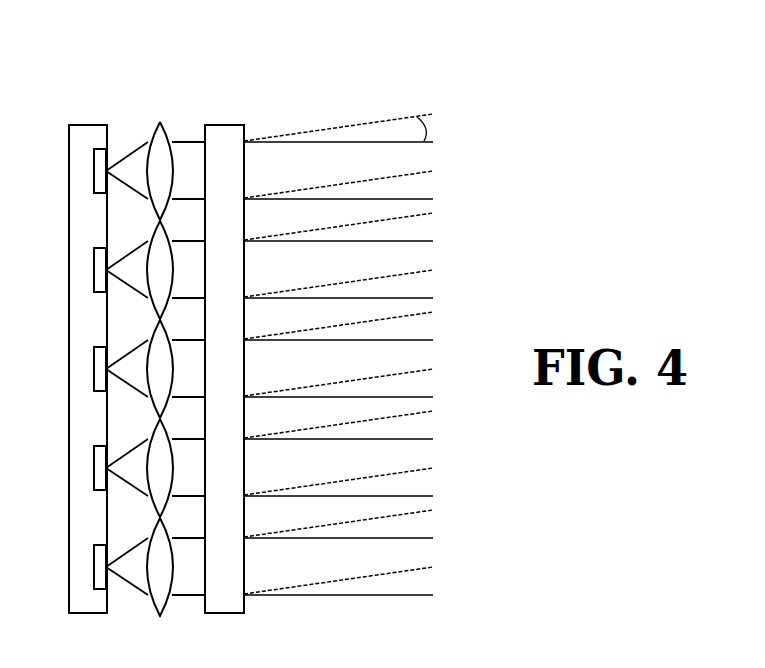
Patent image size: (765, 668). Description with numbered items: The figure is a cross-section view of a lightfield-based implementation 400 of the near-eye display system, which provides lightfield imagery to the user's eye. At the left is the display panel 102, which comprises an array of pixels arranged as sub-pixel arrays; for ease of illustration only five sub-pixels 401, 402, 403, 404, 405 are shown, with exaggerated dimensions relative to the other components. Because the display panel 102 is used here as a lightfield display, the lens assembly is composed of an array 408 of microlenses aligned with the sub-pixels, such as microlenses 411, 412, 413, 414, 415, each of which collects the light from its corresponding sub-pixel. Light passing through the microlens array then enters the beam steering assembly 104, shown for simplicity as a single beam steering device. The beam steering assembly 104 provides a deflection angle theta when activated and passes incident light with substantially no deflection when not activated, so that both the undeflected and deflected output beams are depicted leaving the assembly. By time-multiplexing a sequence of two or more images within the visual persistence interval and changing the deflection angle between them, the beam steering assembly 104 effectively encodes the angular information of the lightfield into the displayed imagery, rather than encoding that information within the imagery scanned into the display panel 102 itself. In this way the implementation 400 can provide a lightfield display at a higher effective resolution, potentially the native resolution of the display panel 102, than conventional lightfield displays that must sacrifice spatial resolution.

The implementation 400 is at (380, 79).
The display panel 102 is at (86, 113).
The beam steering assembly 104 is at (231, 118).
The array of microlenses 408 is at (166, 109).
The sub-pixel 401 is at (94, 172).
The sub-pixel 402 is at (94, 271).
The sub-pixel 403 is at (94, 370).
The sub-pixel 404 is at (94, 469).
The sub-pixel 405 is at (94, 568).
The microlens 411 is at (173, 153).
The microlens 412 is at (173, 252).
The microlens 413 is at (173, 351).
The microlens 414 is at (173, 450).
The microlens 415 is at (173, 549).